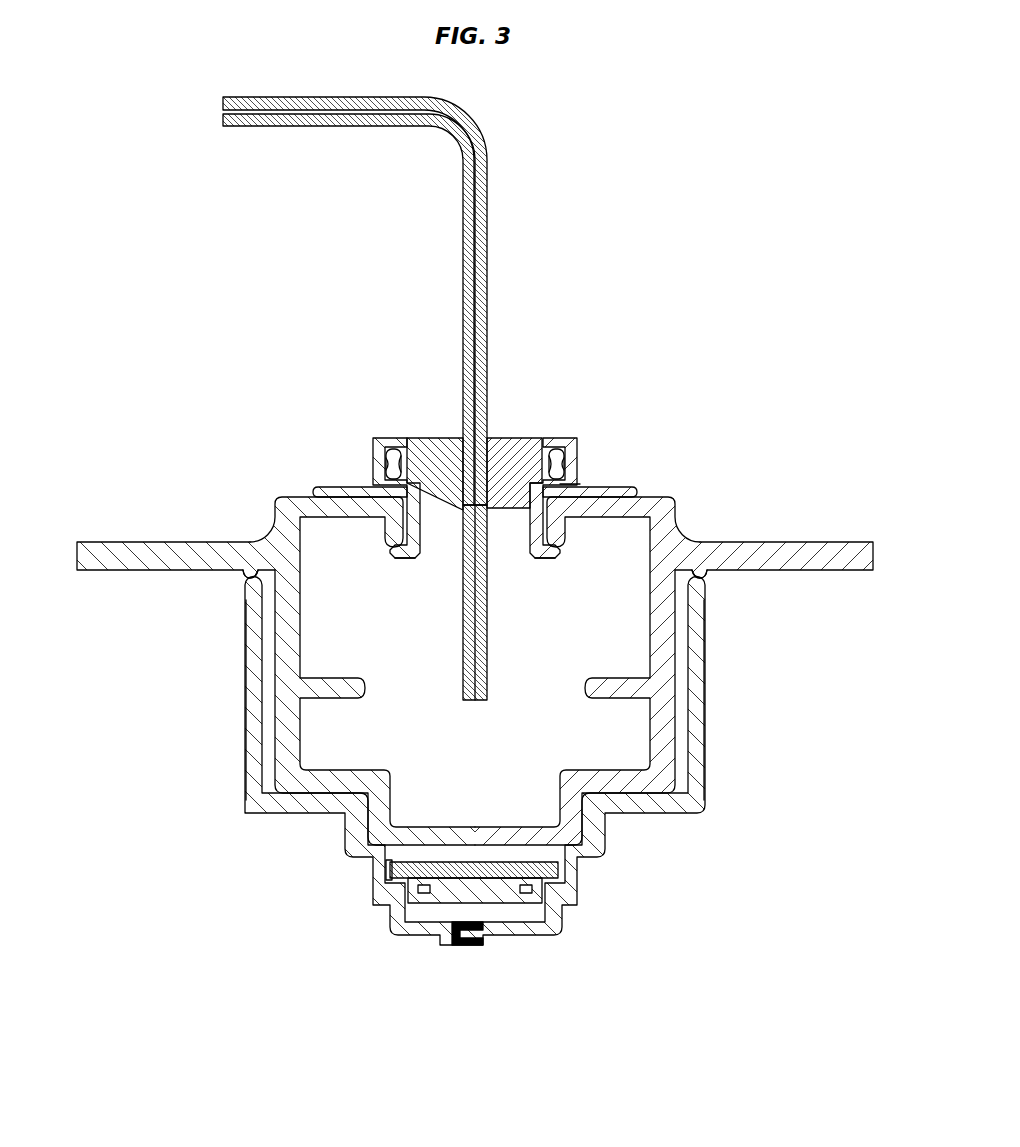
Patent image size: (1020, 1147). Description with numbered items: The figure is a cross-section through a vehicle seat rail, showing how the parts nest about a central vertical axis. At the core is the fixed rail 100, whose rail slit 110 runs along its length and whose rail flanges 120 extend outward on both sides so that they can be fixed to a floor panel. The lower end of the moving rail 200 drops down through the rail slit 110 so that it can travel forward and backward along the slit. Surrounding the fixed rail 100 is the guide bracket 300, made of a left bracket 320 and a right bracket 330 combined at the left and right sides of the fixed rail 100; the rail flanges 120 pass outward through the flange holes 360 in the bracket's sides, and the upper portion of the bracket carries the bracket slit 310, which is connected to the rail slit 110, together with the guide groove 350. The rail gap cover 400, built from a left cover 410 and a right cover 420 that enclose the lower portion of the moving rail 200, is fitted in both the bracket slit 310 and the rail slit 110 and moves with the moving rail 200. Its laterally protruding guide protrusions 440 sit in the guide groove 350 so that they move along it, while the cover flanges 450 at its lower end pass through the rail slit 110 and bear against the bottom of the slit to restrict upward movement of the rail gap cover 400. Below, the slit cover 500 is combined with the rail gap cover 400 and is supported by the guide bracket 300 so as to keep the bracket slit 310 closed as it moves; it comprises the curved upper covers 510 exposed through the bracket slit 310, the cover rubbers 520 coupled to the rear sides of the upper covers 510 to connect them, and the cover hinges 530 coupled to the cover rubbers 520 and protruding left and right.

The fixed rail 100 is at (272, 808).
The rail slit 110 is at (385, 490).
The rail flange 120 is at (142, 550).
The moving rail 200 is at (487, 167).
The guide bracket 300 is at (684, 812).
The bracket slit 310 is at (405, 440).
The left bracket 320 is at (257, 766).
The right bracket 330 is at (700, 724).
The guide groove 350 is at (587, 453).
The flange hole 360 is at (240, 562).
The rail gap cover 400 is at (512, 428).
The left cover 410 is at (443, 442).
The right cover 420 is at (528, 453).
The guide protrusion 440 is at (383, 455).
The cover flange 450 is at (405, 552).
The slit cover 500 is at (416, 908).
The upper cover 510 is at (487, 897).
The cover rubber 520 is at (505, 880).
The cover hinge 530 is at (448, 893).